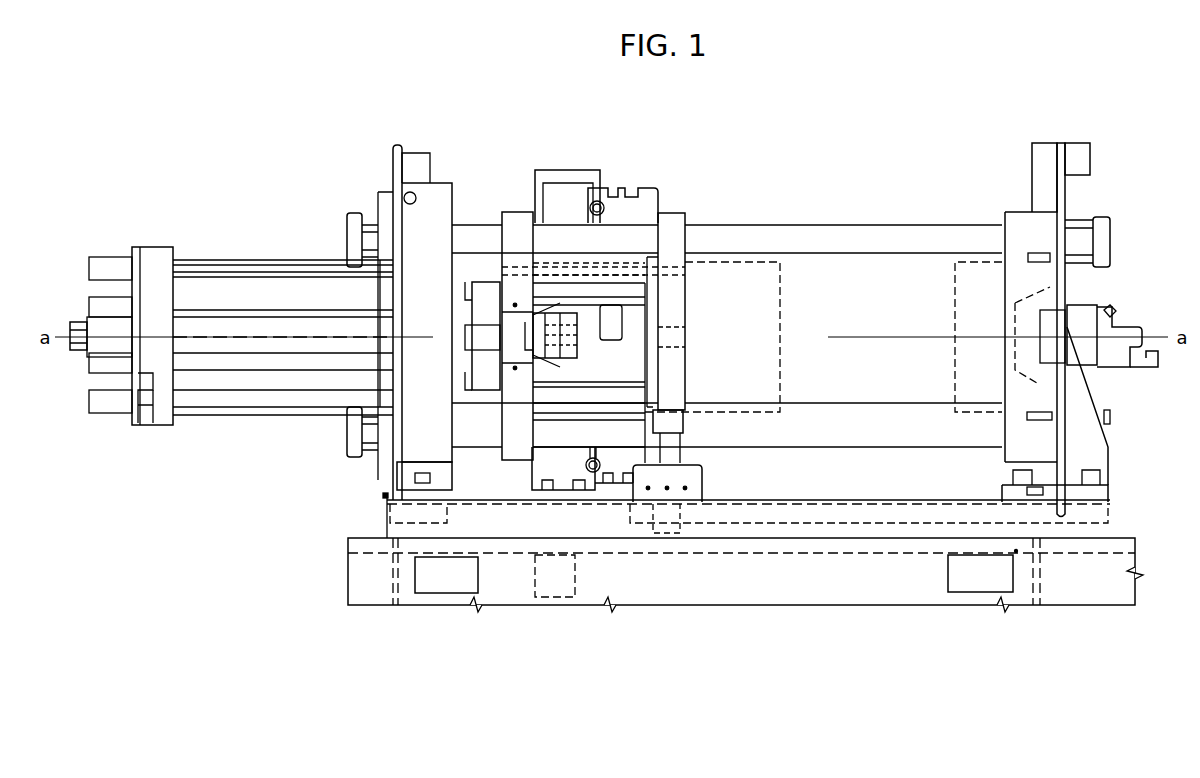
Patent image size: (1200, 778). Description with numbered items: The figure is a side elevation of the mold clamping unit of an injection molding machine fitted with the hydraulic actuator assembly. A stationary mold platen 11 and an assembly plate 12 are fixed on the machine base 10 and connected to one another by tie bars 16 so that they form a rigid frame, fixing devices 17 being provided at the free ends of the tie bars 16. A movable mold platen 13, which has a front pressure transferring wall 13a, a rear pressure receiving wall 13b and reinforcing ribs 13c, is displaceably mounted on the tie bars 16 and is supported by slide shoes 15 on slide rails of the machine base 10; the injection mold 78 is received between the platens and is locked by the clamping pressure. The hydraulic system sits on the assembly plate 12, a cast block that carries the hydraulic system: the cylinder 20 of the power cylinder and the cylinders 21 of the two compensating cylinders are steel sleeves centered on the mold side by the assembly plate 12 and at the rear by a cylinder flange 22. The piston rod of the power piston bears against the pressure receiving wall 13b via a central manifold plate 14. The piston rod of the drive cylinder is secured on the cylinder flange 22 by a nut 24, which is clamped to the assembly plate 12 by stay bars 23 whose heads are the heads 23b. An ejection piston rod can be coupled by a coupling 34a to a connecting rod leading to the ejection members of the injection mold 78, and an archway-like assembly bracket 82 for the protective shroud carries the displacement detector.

The machine base 10 is at (785, 580).
The stationary mold platen 11 is at (1027, 237).
The assembly plate 12 is at (433, 212).
The movable mold platen 13 is at (633, 160).
The front pressure transferring wall 13a is at (668, 245).
The rear pressure receiving wall 13b is at (515, 237).
The reinforcing ribs 13c is at (578, 297).
The central manifold plate 14 is at (483, 378).
The slide shoes 15 is at (693, 480).
The tie bars 16 is at (888, 240).
The fixing devices 17 is at (347, 217).
The cylinder 20 is at (280, 390).
The cylinder of compensating cylinders 21 is at (220, 335).
The cylinder flange 22 is at (157, 367).
The stay bars 23 is at (230, 272).
The heads of the stay bars 23b is at (113, 405).
The nut 24 is at (75, 322).
The coupling 34a is at (552, 350).
The injection mold 78 is at (972, 282).
The assembly bracket 82 is at (633, 207).